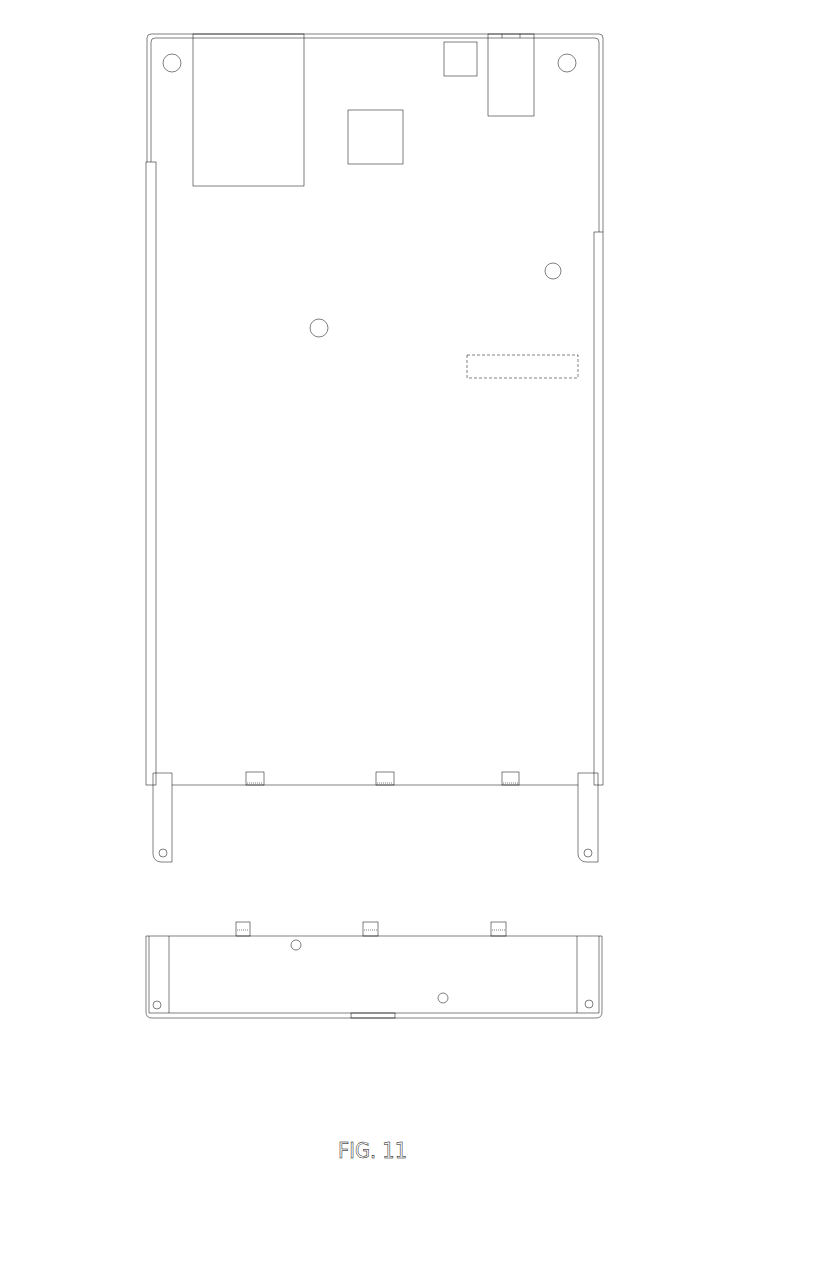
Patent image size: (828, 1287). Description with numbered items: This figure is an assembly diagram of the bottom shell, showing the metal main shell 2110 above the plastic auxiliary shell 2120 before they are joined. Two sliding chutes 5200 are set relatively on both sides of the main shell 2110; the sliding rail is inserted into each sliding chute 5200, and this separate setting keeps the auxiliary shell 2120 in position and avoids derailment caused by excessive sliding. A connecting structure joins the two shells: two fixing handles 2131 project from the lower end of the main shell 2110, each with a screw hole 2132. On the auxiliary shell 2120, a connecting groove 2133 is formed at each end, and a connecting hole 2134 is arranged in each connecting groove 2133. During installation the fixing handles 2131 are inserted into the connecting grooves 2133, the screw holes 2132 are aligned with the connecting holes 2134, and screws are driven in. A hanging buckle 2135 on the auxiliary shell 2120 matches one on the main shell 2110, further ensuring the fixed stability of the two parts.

The main shell 2110 is at (188, 430).
The sliding chute 5200 is at (148, 537).
The fixing handle 2131 is at (166, 811).
The screw hole 2132 is at (167, 855).
The auxiliary shell 2120 is at (282, 990).
The connecting groove 2133 is at (159, 961).
The connecting hole 2134 is at (154, 1004).
The hanging buckle 2135 is at (372, 923).